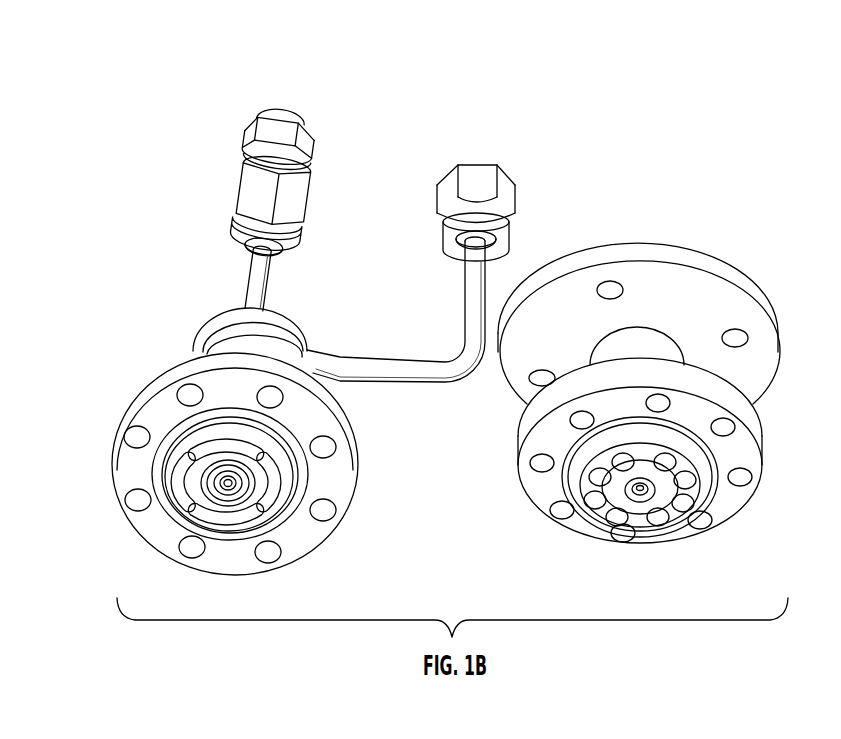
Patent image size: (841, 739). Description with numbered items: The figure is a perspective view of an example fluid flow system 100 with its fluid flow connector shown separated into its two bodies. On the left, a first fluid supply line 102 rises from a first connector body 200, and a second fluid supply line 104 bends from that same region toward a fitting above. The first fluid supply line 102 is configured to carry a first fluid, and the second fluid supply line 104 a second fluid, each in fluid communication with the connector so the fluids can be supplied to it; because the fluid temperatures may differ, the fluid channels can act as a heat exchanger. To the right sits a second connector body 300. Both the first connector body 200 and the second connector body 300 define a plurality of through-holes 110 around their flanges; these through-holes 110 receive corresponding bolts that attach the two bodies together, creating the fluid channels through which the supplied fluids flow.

The fluid flow system 100 is at (186, 133).
The first fluid supply line 102 is at (221, 217).
The second fluid supply line 104 is at (383, 347).
The through-holes 110 is at (246, 388).
The first connector body 200 is at (111, 476).
The second connector body 300 is at (764, 461).